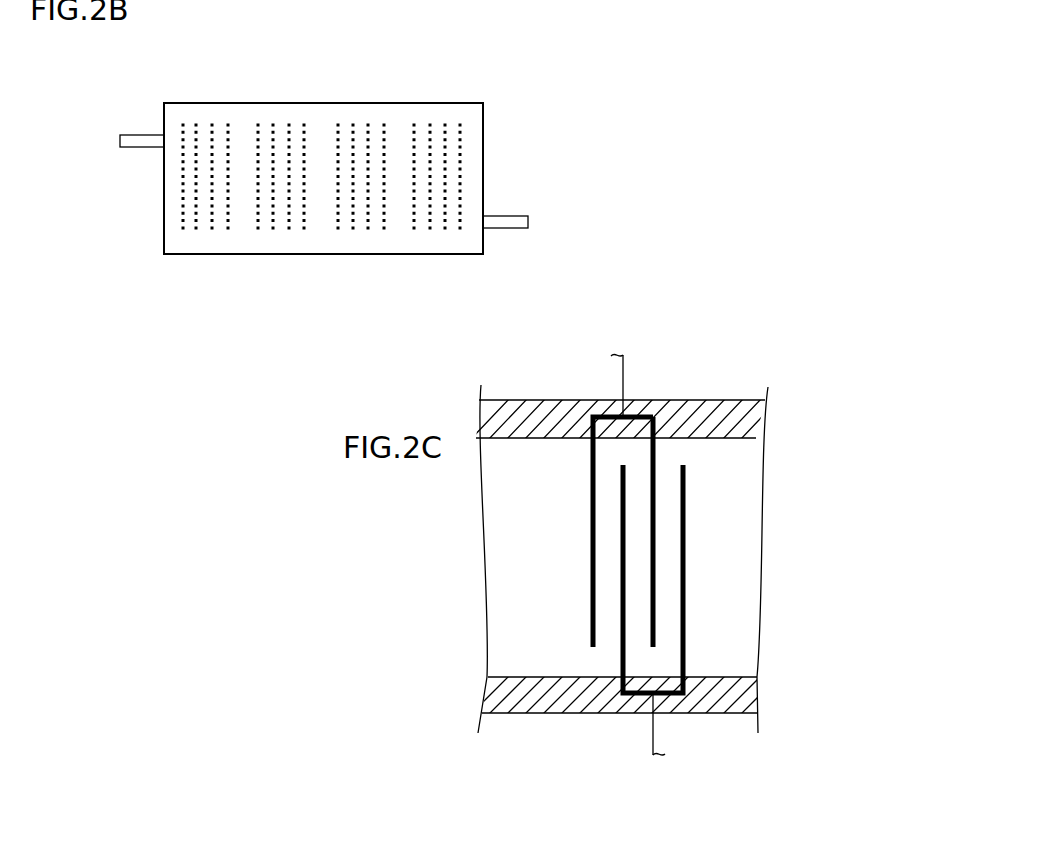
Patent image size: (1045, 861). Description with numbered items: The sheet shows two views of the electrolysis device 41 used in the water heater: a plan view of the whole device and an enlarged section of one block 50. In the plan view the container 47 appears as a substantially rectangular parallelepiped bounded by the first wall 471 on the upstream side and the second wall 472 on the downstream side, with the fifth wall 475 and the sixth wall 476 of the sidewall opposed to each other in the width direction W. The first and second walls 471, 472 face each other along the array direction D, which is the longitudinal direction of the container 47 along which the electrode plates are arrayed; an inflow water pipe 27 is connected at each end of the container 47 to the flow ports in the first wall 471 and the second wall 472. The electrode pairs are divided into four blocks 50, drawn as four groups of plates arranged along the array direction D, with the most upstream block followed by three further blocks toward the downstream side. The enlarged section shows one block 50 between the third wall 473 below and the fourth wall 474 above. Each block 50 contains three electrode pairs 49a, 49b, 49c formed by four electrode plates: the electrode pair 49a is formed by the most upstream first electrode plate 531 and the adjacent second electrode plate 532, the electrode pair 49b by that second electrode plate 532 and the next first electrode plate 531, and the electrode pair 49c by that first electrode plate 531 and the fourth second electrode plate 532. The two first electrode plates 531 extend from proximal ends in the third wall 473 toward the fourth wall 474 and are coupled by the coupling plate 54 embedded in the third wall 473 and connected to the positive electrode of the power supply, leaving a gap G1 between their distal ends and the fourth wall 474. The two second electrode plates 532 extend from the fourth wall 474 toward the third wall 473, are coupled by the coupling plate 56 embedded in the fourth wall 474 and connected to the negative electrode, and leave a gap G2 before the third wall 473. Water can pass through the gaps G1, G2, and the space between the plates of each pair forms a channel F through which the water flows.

In FIG. 2B, the electrolysis device 41 is at (100, 55).
In FIG. 2B, the container 47 is at (472, 100).
In FIG. 2B, the block 50 is at (204, 122).
In FIG. 2C, the block 50 is at (710, 585).
In FIG. 2B, the inflow water pipe 27 is at (140, 138).
In FIG. 2B, the first wall 471 is at (486, 154).
In FIG. 2B, the second wall 472 is at (164, 192).
In FIG. 2B, the fourth wall 474 is at (240, 228).
In FIG. 2C, the fourth wall 474 is at (748, 418).
In FIG. 2B, the fifth wall 475 is at (390, 255).
In FIG. 2B, the sixth wall 476 is at (337, 91).
In FIG. 2B, the width direction W is at (76, 150).
In FIG. 2B, the array direction D is at (368, 309).
In FIG. 2C, the third wall 473 is at (508, 700).
In FIG. 2C, the electrode pair 49c is at (583, 345).
In FIG. 2C, the electrode pair 49a is at (763, 347).
In FIG. 2C, the electrode pair 49b is at (635, 785).
In FIG. 2C, the first electrode plate 531 is at (621, 490).
In FIG. 2C, the second electrode plate 532 is at (592, 512).
In FIG. 2C, the coupling plate 56 is at (645, 415).
In FIG. 2C, the coupling plate 54 is at (674, 698).
In FIG. 2C, the gap G2 is at (622, 452).
In FIG. 2C, the gap G1 is at (664, 660).
In FIG. 2C, the channel F is at (606, 530).